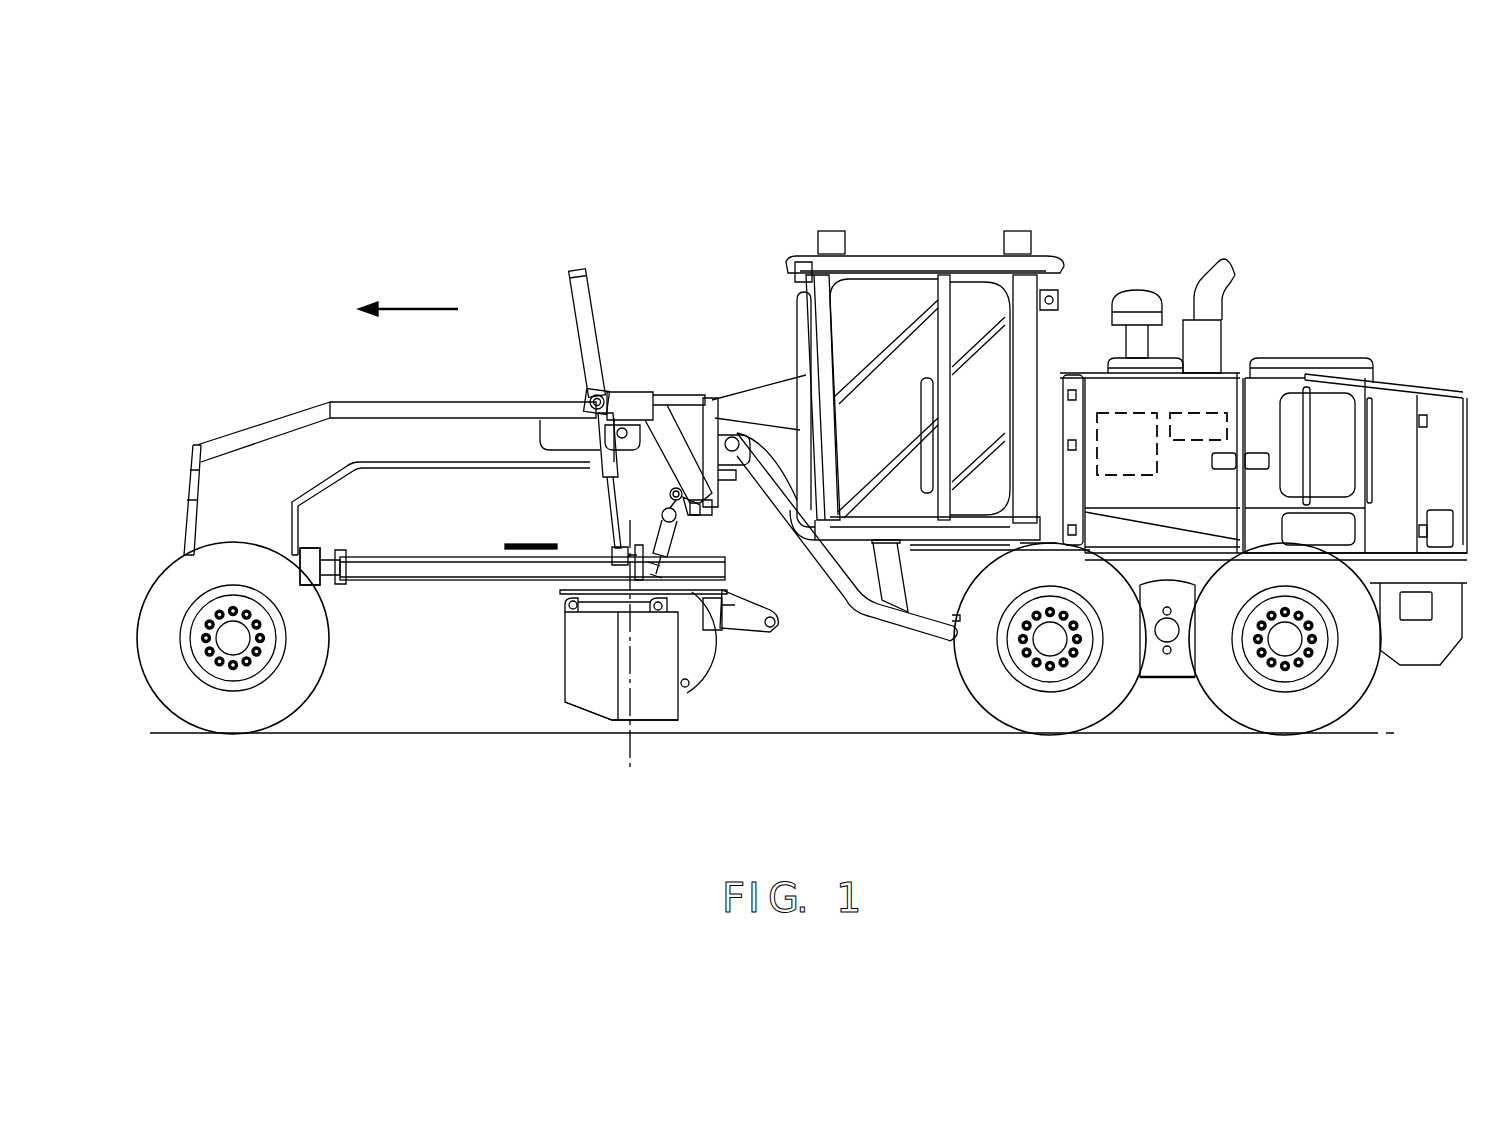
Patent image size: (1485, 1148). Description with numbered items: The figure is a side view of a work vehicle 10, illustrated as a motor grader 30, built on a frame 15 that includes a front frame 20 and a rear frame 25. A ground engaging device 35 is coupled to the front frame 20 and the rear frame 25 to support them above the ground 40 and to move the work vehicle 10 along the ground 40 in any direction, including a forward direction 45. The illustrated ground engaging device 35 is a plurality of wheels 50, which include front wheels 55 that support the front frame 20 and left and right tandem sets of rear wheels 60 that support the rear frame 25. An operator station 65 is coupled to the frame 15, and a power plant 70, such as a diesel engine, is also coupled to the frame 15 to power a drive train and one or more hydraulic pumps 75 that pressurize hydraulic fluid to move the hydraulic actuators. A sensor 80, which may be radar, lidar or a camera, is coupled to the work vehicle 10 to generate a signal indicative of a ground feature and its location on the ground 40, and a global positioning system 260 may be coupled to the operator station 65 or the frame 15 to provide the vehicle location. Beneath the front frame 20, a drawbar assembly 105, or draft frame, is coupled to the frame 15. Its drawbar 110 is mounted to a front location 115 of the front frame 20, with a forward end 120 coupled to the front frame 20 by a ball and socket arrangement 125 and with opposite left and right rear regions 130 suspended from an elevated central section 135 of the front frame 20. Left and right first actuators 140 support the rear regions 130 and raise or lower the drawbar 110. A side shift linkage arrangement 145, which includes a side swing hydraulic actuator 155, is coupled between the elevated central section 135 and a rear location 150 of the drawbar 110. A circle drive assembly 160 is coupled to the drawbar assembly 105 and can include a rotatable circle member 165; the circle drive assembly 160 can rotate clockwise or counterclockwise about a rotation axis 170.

The work vehicle 10 is at (1401, 177).
The frame 15 is at (722, 343).
The front frame 20 is at (517, 390).
The rear frame 25 is at (1392, 572).
The motor grader 30 is at (1284, 191).
The ground engaging device 35 is at (117, 655).
The ground 40 is at (802, 745).
The forward direction 45 is at (400, 309).
The plurality of wheels 50 is at (235, 715).
The front wheels 55 is at (277, 690).
The rear wheels 60 is at (995, 683).
The operator station 65 is at (938, 258).
The power plant 70 is at (1158, 452).
The hydraulic pumps 75 is at (1207, 412).
The sensor 80 is at (823, 228).
The drawbar assembly 105 is at (463, 526).
The drawbar 110 is at (490, 600).
The front location 115 is at (363, 598).
The forward end 120 is at (396, 598).
The ball and socket arrangement 125 is at (343, 555).
The left and right rear regions 130 is at (683, 548).
The elevated central section 135 is at (553, 390).
The first actuators 140 is at (600, 290).
The side shift linkage arrangement 145 is at (703, 537).
The rear location 150 is at (625, 572).
The side swing hydraulic actuator 155 is at (658, 510).
The circle drive assembly 160 is at (553, 600).
The rotatable circle member 165 is at (562, 596).
The rotation axis 170 is at (620, 743).
The global positioning system 260 is at (1018, 228).